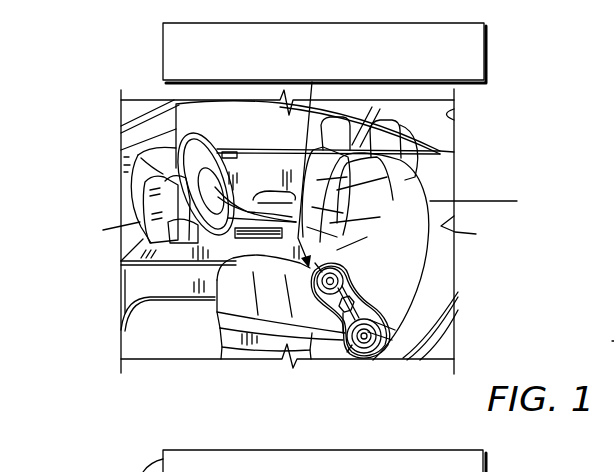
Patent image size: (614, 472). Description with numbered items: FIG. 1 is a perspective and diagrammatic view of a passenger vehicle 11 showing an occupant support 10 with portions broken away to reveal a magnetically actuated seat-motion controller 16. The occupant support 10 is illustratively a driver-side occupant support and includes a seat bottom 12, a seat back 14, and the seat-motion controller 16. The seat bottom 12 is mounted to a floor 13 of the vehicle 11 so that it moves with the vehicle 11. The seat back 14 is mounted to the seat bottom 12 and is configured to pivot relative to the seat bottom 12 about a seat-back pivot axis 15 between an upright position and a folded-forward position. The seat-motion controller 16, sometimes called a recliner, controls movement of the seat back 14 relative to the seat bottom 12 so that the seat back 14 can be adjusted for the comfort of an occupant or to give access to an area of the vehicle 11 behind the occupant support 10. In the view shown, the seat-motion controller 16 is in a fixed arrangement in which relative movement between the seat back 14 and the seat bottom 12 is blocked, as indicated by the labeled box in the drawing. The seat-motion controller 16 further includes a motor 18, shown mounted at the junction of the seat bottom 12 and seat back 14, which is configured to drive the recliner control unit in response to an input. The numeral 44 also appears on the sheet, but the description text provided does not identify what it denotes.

The occupant support 10 is at (537, 76).
The vehicle 11 is at (121, 100).
The seat bottom 12 is at (310, 368).
The floor 13 is at (170, 349).
The seat back 14 is at (432, 183).
The seat-back pivot axis 15 is at (372, 358).
The seat-motion controller 16 is at (163, 50).
The motor 18 is at (358, 290).
The seat-motion controller 44 is at (613, 343).